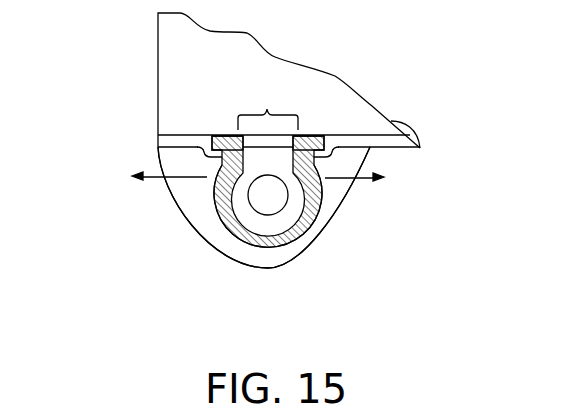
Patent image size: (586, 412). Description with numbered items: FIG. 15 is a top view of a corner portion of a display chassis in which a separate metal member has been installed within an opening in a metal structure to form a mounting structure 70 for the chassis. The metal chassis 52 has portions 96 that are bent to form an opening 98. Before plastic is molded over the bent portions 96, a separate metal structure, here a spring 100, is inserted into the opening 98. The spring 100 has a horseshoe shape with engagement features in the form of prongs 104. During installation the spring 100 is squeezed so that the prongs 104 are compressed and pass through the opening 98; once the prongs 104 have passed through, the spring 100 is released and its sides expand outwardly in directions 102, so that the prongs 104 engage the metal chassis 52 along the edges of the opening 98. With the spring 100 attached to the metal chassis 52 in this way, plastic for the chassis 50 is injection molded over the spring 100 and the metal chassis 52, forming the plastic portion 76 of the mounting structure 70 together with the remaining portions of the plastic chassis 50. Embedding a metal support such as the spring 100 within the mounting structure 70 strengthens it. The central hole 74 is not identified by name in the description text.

The overmolded plastic 50 is at (158, 72).
The metal chassis 52 is at (391, 119).
The mounting structure 70 is at (328, 270).
The hole 74 is at (268, 208).
The plastic portion 76 is at (207, 220).
The bent portions 96 is at (328, 153).
The opening 98 is at (268, 105).
The spring 100 is at (321, 206).
The directions 102 is at (160, 178).
The prongs 104 is at (222, 133).